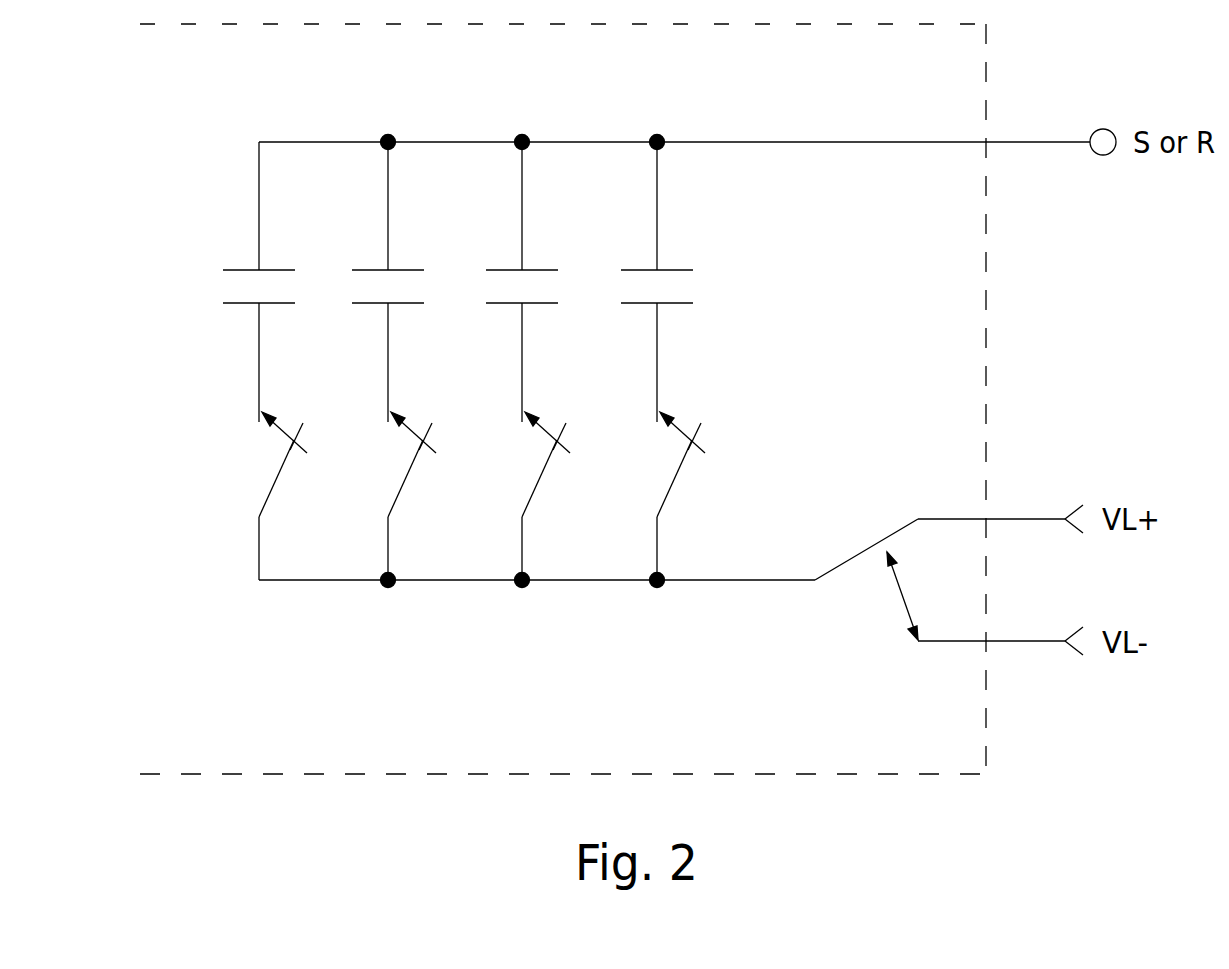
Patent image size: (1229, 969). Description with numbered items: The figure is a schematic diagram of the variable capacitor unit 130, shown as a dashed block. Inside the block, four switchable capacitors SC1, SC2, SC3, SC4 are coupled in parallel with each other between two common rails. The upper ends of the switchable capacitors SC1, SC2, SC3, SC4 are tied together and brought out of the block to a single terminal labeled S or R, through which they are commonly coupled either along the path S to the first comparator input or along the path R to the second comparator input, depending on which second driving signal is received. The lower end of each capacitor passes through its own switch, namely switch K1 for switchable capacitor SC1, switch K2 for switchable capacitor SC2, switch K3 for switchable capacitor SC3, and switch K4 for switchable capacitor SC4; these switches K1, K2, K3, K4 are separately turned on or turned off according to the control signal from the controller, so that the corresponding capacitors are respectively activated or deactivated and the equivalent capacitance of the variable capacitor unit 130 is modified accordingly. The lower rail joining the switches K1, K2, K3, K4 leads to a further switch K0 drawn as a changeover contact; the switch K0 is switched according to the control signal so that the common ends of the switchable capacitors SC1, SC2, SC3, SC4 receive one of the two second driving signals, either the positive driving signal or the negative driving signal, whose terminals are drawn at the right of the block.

The variable capacitor unit 130 is at (479, 699).
The switchable capacitor SC1 is at (273, 282).
The switchable capacitor SC2 is at (403, 282).
The switchable capacitor SC3 is at (537, 282).
The switchable capacitor SC4 is at (672, 282).
The switch K1 is at (259, 496).
The switch K2 is at (389, 496).
The switch K3 is at (522, 496).
The switch K4 is at (656, 496).
The switch K0 is at (949, 580).